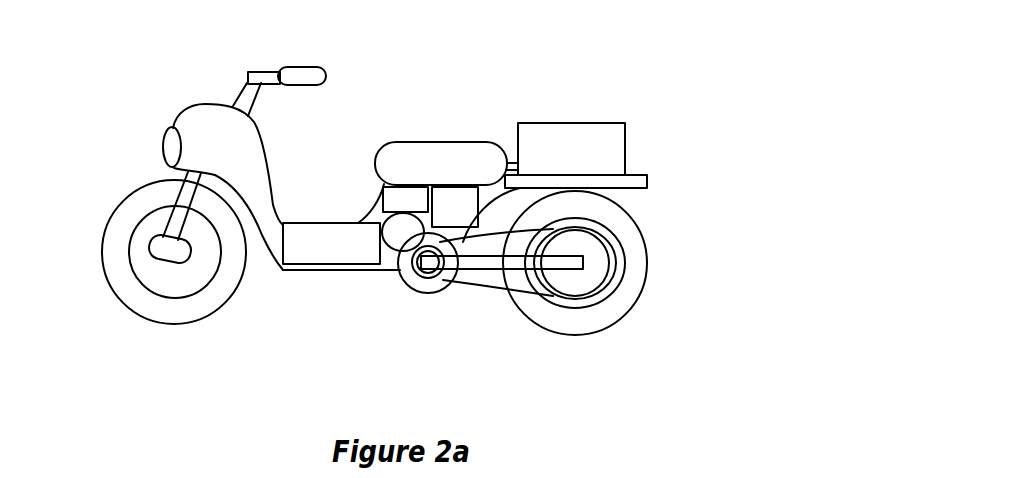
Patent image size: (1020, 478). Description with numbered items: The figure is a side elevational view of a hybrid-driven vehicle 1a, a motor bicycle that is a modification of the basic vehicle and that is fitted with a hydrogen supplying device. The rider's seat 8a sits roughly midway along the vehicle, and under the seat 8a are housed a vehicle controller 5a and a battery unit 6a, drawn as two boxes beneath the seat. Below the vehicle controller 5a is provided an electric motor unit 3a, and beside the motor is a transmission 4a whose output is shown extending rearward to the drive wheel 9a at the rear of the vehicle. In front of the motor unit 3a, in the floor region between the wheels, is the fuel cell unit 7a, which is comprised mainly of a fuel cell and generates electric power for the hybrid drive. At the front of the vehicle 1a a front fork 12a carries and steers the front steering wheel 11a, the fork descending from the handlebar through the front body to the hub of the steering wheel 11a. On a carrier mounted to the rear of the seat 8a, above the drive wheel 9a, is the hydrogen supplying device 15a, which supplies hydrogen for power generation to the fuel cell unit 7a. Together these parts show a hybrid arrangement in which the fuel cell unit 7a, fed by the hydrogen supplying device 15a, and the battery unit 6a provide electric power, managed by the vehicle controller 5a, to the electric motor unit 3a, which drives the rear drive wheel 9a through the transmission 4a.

The hybrid-driven vehicle 1a is at (186, 97).
The electric motor unit 3a is at (393, 250).
The transmission 4a is at (428, 293).
The vehicle controller 5a is at (395, 198).
The battery unit 6a is at (463, 195).
The fuel cell unit 7a is at (317, 270).
The seat 8a is at (415, 152).
The drive wheel 9a is at (640, 258).
The steering wheel 11a is at (122, 287).
The front fork 12a is at (187, 203).
The hydrogen supplying device 15a is at (652, 118).